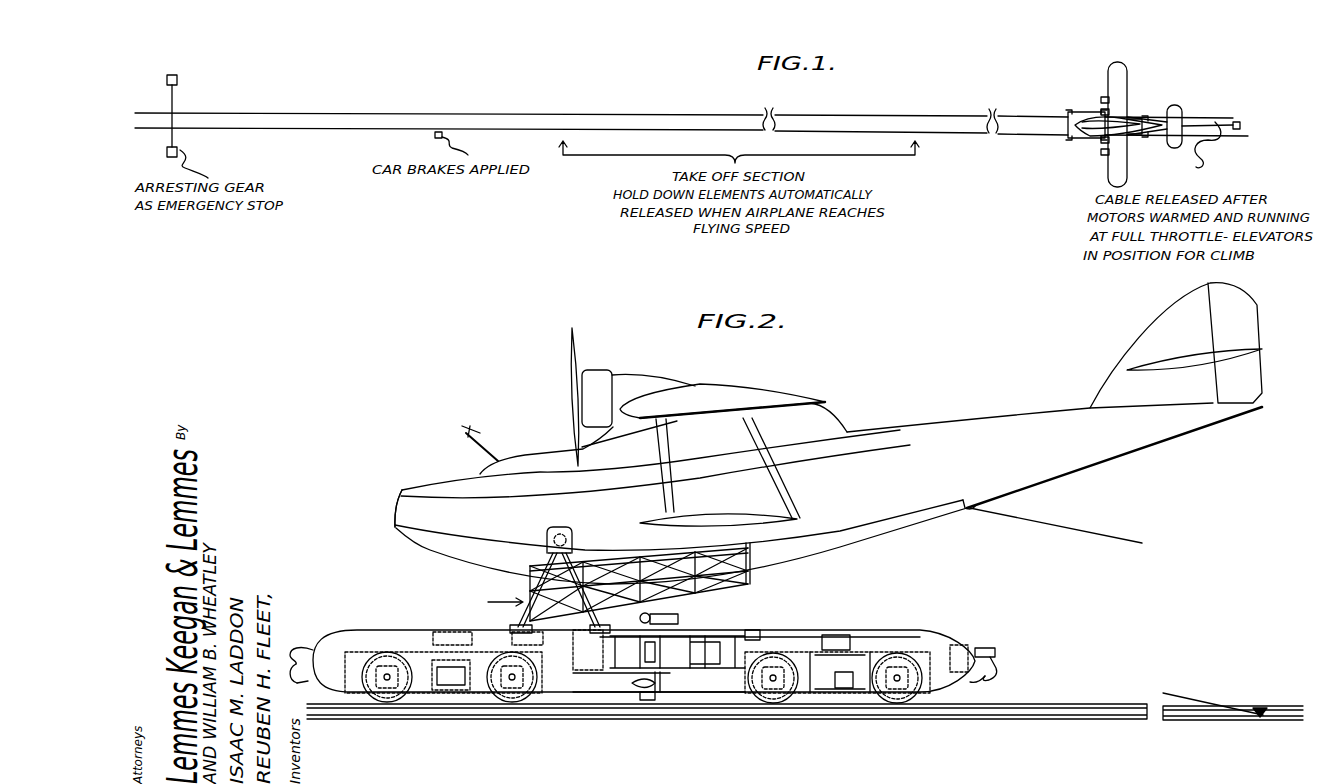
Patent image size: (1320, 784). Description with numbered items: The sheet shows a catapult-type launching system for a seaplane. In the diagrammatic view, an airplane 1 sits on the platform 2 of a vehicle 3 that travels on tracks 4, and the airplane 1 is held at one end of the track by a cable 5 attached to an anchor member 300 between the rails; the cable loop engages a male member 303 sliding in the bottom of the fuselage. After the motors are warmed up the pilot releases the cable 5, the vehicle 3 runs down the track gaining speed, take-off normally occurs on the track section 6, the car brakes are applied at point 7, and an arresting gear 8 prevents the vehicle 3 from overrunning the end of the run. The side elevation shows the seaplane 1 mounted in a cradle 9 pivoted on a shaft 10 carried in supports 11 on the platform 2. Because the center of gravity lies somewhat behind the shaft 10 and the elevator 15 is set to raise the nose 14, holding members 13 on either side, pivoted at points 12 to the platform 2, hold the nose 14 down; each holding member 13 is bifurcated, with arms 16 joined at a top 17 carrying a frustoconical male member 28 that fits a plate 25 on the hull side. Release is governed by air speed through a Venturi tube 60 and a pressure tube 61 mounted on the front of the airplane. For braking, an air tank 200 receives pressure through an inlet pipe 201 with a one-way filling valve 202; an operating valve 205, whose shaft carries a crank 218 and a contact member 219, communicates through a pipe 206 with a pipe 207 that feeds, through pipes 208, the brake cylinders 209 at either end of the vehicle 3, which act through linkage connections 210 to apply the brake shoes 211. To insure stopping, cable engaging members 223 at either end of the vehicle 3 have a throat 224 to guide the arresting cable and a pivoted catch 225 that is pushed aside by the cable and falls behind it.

In FIG. 1, the airplane 1 is at (1127, 110).
In FIG. 2, the airplane 1 is at (932, 428).
In FIG. 1, the platform 2 is at (1076, 112).
In FIG. 2, the platform 2 is at (883, 632).
In FIG. 1, the vehicle 3 is at (1142, 116).
In FIG. 2, the vehicle 3 is at (951, 632).
In FIG. 1, the tracks 4 is at (1015, 135).
In FIG. 2, the tracks 4 is at (1068, 707).
In FIG. 1, the cable 5 is at (1201, 122).
In FIG. 2, the cable 5 is at (1141, 541).
In FIG. 1, the take-off section of track 6 is at (722, 121).
In FIG. 1, the brake application point 7 is at (432, 137).
In FIG. 1, the arresting gear 8 is at (180, 98).
In FIG. 2, the cradle 9 is at (752, 572).
In FIG. 2, the shaft 10 is at (651, 616).
In FIG. 2, the supports 11 is at (669, 623).
In FIG. 2, the pivot points 12 is at (528, 626).
In FIG. 2, the holding members 13 is at (495, 601).
In FIG. 2, the nose 14 is at (397, 515).
In FIG. 1, the elevator 15 is at (1179, 112).
In FIG. 2, the elevator 15 is at (1250, 351).
In FIG. 2, the arms 16 is at (588, 567).
In FIG. 2, the top of holding member 17 is at (573, 558).
In FIG. 2, the plate 25 is at (553, 531).
In FIG. 2, the frustoconical male member 28 is at (546, 543).
In FIG. 2, the Venturi tube 60 is at (462, 430).
In FIG. 2, the pressure tube 61 is at (466, 439).
In FIG. 2, the air tank 200 is at (588, 650).
In FIG. 2, the inlet pipe 201 is at (649, 652).
In FIG. 2, the one-way filling valve 202 is at (705, 652).
In FIG. 2, the operating valve 205 is at (640, 684).
In FIG. 2, the pipe 206 is at (659, 682).
In FIG. 2, the pipe 207 is at (738, 633).
In FIG. 2, the pipe 208 is at (472, 632).
In FIG. 2, the brake cylinders 209 is at (447, 690).
In FIG. 2, the operating linkage connections 210 is at (478, 700).
In FIG. 2, the brake shoes 211 is at (416, 690).
In FIG. 2, the crank 218 is at (653, 692).
In FIG. 2, the contact member 219 is at (645, 690).
In FIG. 2, the cable engaging members 223 is at (986, 652).
In FIG. 2, the throat construction 224 is at (298, 673).
In FIG. 2, the pivoted catch 225 is at (294, 650).
In FIG. 1, the anchor member 300 is at (1243, 126).
In FIG. 2, the anchor member 300 is at (1271, 712).
In FIG. 2, the male member 303 is at (971, 511).